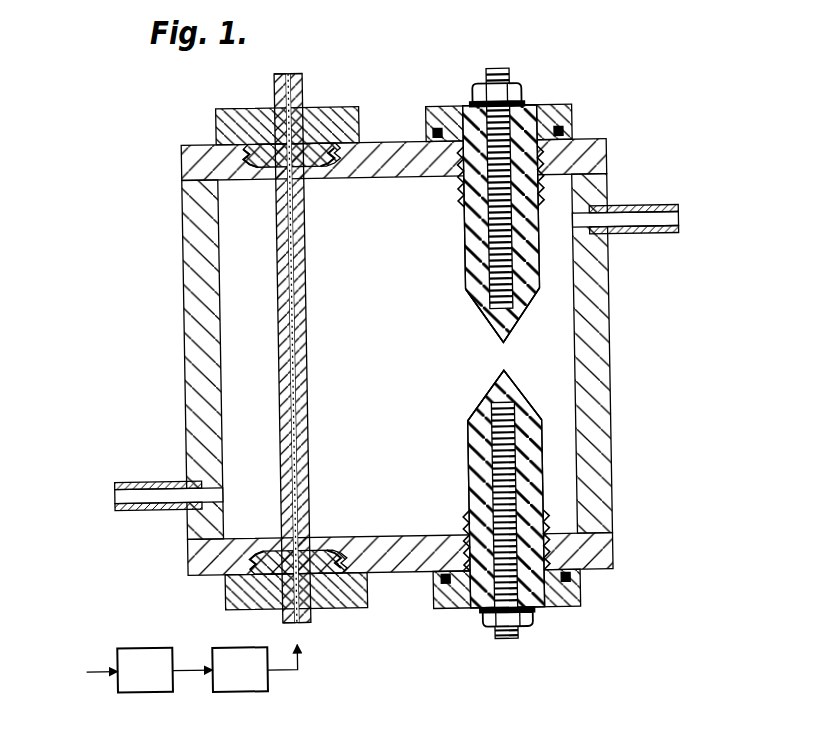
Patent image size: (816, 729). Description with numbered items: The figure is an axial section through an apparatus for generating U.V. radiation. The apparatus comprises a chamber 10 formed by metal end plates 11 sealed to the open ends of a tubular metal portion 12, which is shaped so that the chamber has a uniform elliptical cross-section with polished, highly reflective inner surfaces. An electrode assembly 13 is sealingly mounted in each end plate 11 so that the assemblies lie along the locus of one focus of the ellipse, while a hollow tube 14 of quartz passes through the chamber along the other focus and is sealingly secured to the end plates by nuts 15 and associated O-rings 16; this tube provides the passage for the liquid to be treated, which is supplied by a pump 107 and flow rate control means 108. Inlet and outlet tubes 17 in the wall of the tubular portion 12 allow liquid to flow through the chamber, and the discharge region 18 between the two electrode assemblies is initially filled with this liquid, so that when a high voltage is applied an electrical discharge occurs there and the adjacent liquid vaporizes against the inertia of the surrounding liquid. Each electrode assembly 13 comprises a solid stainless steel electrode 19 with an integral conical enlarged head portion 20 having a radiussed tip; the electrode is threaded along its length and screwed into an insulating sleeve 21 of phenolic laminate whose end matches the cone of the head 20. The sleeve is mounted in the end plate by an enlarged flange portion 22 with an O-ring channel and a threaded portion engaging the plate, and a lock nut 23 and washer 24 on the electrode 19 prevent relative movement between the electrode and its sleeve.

The chamber 10 is at (513, 657).
The end plate 11 is at (396, 152).
The tubular metal portion 12 is at (192, 366).
The electrode assembly 13 is at (533, 350).
The hollow tube 14 is at (301, 410).
The nut 15 is at (337, 111).
The O-ring 16 is at (268, 168).
The inlet and outlet tube 17 is at (141, 506).
The discharge region 18 is at (514, 357).
The electrode 19 is at (492, 214).
The enlarged head portion 20 is at (493, 326).
The insulating sleeve 21 is at (472, 265).
The flange portion 22 is at (440, 117).
The lock nut 23 is at (522, 94).
The washer 24 is at (529, 105).
The pump 107 is at (146, 644).
The flow rate control means 108 is at (242, 645).